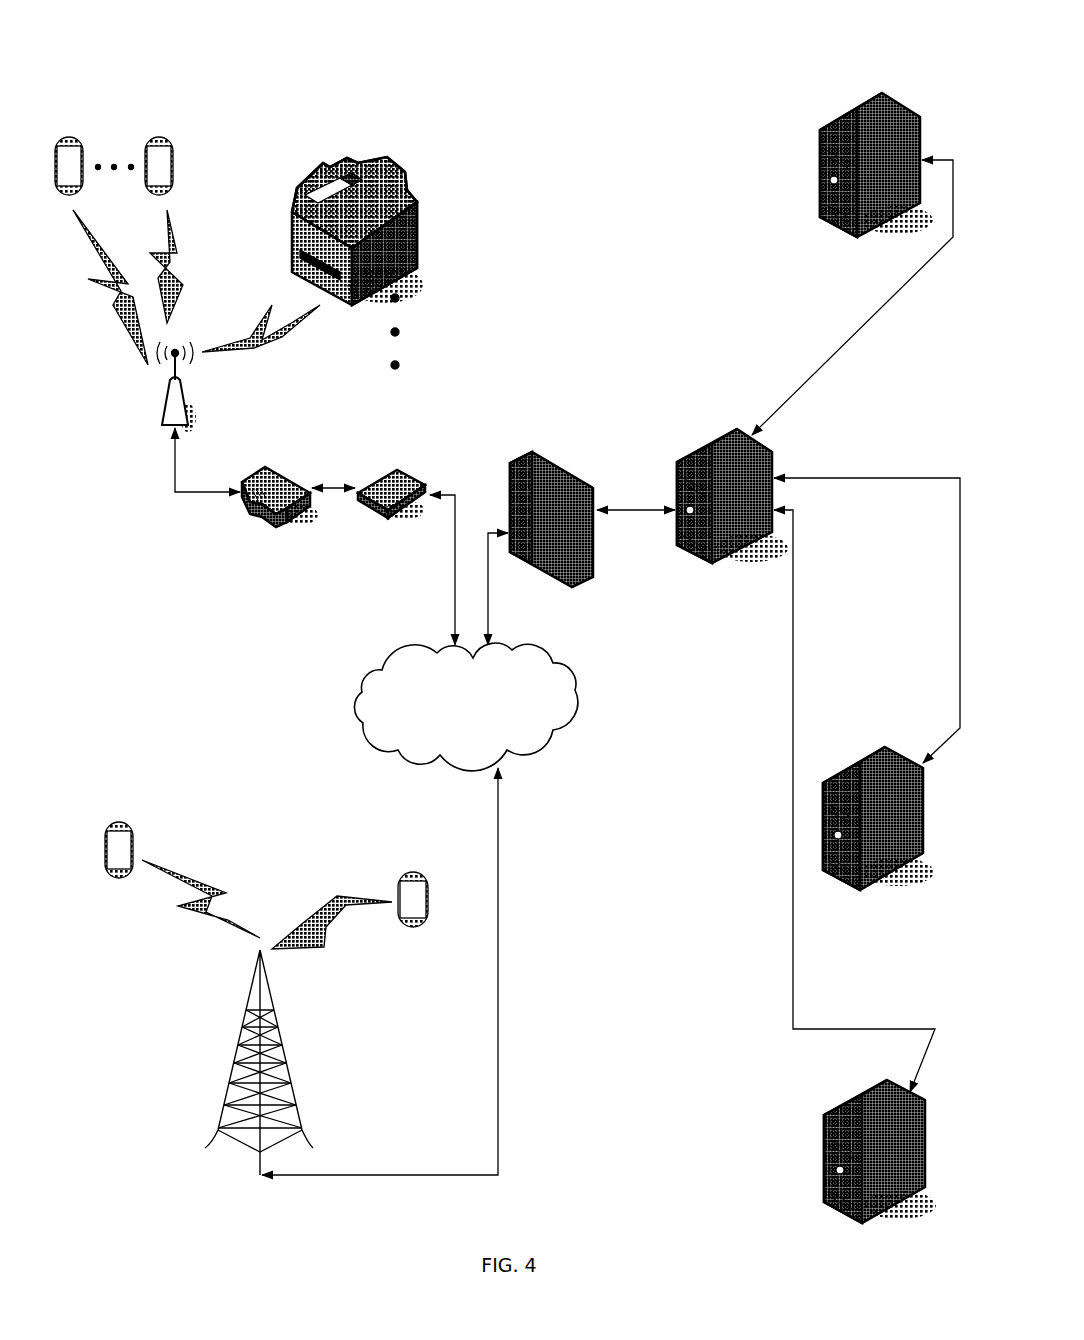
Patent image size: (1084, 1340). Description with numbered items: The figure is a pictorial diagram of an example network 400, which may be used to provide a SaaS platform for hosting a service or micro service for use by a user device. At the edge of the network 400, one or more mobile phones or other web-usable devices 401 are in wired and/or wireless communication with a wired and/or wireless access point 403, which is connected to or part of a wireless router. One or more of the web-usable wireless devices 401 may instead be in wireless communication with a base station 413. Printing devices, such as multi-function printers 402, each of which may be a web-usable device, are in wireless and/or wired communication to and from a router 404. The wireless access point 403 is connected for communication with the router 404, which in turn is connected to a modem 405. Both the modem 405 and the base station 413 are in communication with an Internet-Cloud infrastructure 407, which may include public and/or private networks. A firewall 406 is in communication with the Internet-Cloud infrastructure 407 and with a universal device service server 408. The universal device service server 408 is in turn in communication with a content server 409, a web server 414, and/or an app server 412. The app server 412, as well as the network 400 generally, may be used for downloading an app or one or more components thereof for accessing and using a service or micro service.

The network 400 is at (188, 52).
The web-usable devices 401 is at (405, 872).
The multi-function printers 402 is at (418, 212).
The wireless access point 403 is at (188, 390).
The router 404 is at (260, 518).
The modem 405 is at (385, 520).
The firewall 406 is at (548, 460).
The Internet-Cloud infrastructure 407 is at (465, 707).
The universal device service server 408 is at (735, 432).
The content server 409 is at (820, 135).
The app server 412 is at (824, 1112).
The base station 413 is at (283, 1068).
The web server 414 is at (885, 745).